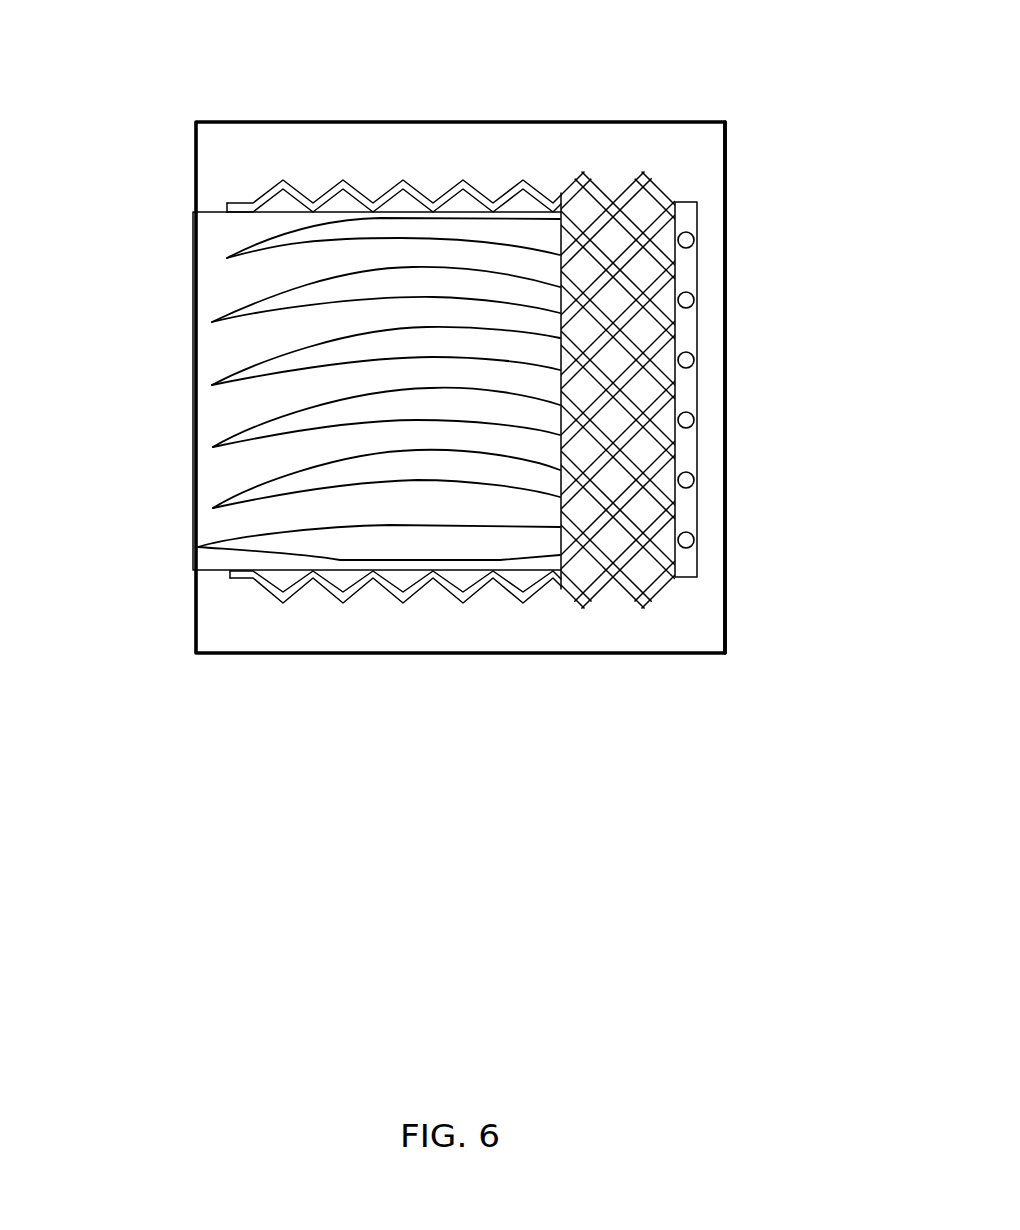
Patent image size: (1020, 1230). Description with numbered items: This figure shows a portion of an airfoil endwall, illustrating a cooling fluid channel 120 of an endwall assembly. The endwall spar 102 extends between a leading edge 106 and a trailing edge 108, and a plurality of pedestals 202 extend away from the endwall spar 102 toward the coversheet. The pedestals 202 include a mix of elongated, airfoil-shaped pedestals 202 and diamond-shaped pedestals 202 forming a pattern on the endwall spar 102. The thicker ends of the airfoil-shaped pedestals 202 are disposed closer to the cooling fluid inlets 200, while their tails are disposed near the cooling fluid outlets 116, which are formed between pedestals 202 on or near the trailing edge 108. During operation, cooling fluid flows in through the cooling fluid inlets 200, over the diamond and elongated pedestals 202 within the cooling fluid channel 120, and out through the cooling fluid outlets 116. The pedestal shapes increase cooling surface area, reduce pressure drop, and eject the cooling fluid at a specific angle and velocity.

The endwall spar 102 is at (305, 165).
The leading edge 106 is at (725, 382).
The trailing edge 108 is at (197, 437).
The cooling fluid outlets 116 is at (213, 480).
The cooling fluid channel 120 is at (615, 570).
The cooling fluid inlets 200 is at (688, 546).
The pedestals 202 is at (443, 288).